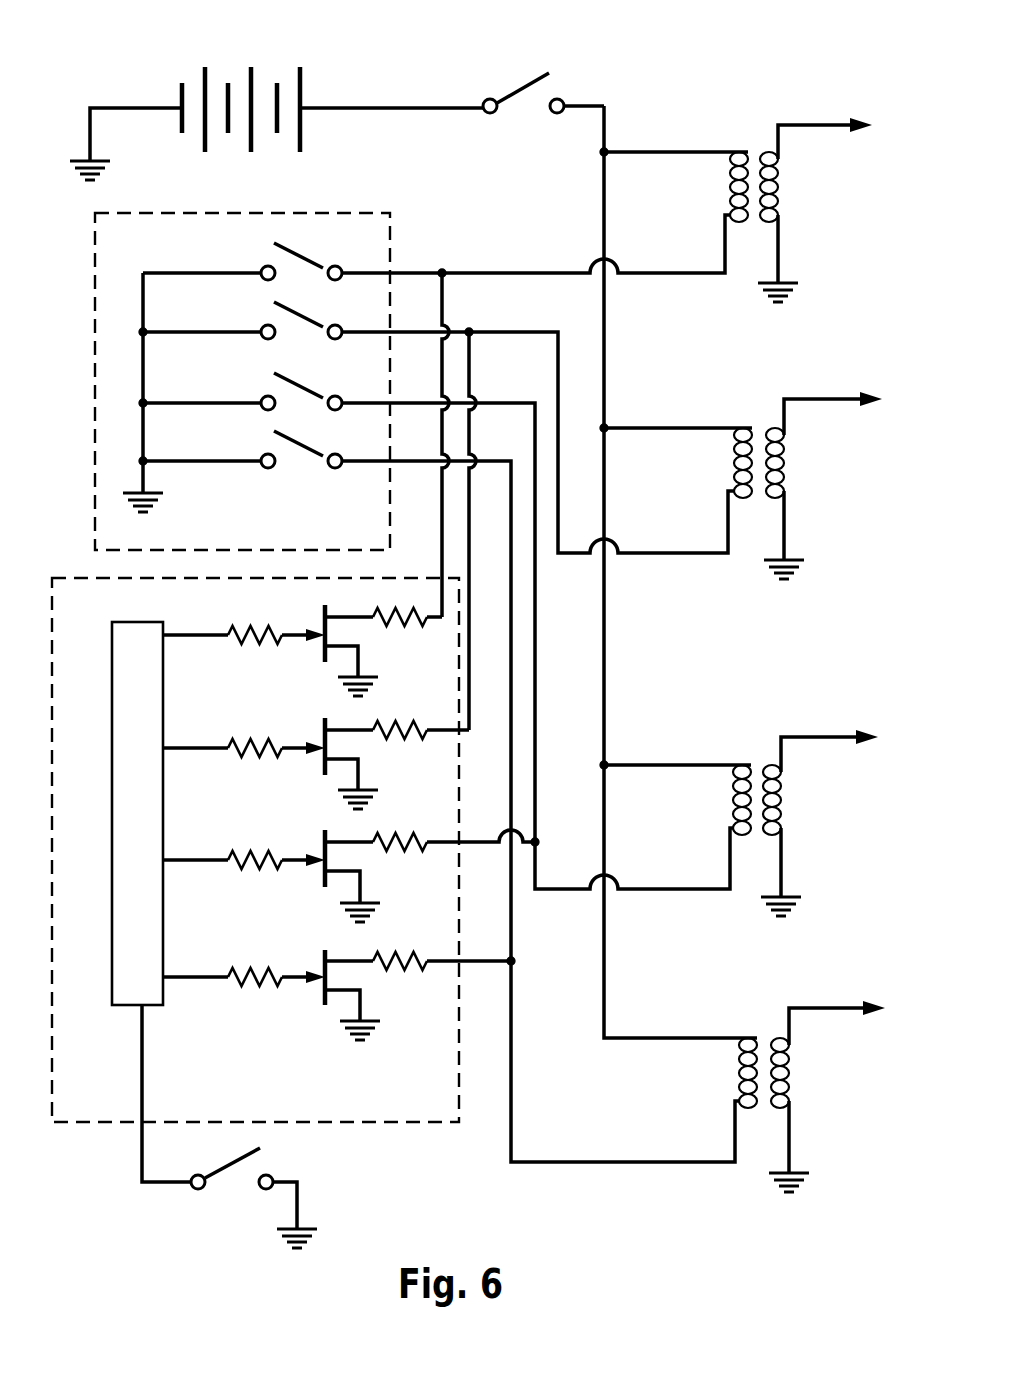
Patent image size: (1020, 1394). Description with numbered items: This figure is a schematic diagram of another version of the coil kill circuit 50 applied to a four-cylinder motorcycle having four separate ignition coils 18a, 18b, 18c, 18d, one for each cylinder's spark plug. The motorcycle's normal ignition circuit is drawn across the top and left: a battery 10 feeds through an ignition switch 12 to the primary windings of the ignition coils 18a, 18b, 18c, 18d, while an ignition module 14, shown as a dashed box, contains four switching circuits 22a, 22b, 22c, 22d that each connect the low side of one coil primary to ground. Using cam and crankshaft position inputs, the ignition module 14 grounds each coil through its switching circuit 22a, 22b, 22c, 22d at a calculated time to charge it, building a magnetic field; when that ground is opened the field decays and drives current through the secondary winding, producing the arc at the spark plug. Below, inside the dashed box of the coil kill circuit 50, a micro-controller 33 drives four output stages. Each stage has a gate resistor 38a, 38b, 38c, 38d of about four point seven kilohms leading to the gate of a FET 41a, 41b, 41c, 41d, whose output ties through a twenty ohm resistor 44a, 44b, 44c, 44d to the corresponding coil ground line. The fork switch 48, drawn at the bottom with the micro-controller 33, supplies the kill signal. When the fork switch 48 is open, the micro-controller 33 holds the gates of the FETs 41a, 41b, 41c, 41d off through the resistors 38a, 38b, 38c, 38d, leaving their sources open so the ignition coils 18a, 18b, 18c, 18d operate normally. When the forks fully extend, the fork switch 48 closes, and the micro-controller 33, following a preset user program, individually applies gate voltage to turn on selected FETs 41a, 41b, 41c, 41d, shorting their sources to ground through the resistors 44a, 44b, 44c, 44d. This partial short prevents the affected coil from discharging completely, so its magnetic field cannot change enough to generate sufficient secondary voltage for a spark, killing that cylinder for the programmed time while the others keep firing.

The battery 10 is at (253, 64).
The ignition switch 12 is at (531, 100).
The ignition module 14 is at (83, 296).
The switching circuit 22a is at (296, 273).
The switching circuit 22b is at (296, 331).
The switching circuit 22c is at (297, 403).
The switching circuit 22d is at (297, 458).
The ignition coil 18a is at (779, 172).
The ignition coil 18b is at (785, 464).
The ignition coil 18c is at (782, 790).
The ignition coil 18d is at (790, 1073).
The coil kill circuit 50 is at (83, 565).
The micro-controller 33 is at (112, 845).
The 4.7 K ohm resistor 38a is at (259, 622).
The 4.7 K ohm resistor 38b is at (259, 735).
The 4.7 K ohm resistor 38c is at (259, 847).
The 4.7 K ohm resistor 38d is at (262, 970).
The FET 41a is at (322, 652).
The FET 41b is at (322, 765).
The FET 41c is at (322, 877).
The FET 41d is at (322, 1003).
The 20 ohm resistor 44a is at (412, 626).
The 20 ohm resistor 44b is at (412, 739).
The 20 ohm resistor 44c is at (408, 852).
The 20 ohm resistor 44d is at (410, 978).
The fork switch 48 is at (207, 1188).